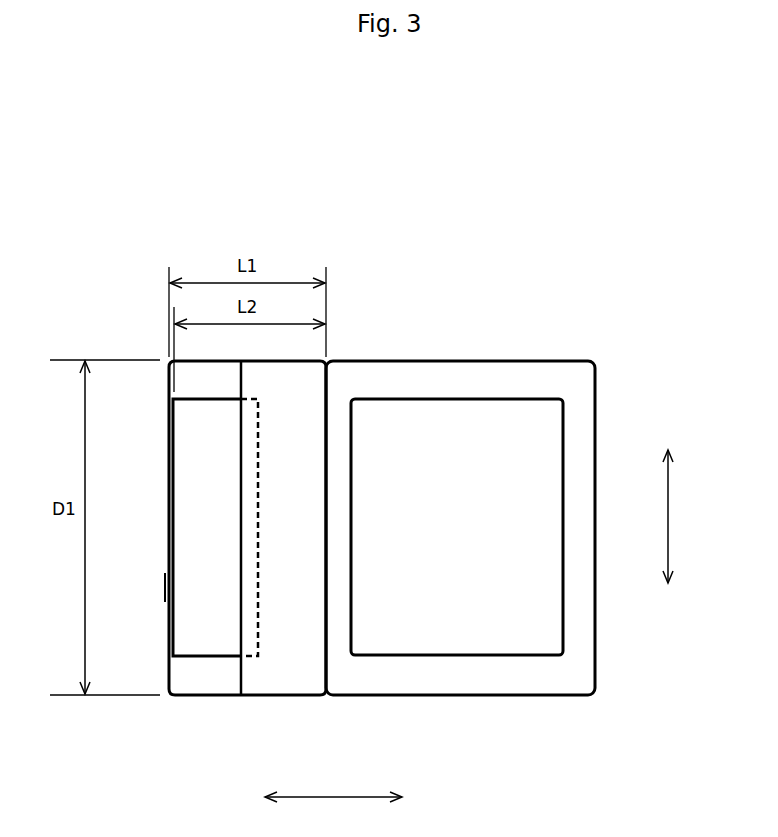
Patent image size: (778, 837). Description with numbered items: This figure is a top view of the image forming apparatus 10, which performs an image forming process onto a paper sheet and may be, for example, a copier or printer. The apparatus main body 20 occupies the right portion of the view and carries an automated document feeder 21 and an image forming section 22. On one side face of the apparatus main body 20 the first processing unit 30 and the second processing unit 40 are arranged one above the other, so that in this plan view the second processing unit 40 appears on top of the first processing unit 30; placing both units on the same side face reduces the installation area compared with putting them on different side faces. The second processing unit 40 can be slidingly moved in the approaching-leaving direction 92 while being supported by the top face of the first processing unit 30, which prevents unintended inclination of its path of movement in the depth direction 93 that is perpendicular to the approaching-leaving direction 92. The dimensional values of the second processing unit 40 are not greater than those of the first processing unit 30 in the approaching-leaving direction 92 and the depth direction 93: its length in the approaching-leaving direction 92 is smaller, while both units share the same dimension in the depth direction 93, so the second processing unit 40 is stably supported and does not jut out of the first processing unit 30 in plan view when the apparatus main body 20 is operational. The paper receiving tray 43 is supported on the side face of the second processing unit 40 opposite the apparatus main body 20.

The image forming apparatus 10 is at (147, 188).
The apparatus main body 20 is at (488, 556).
The automated document feeder 21 is at (555, 440).
The image forming section 22 is at (583, 482).
The first processing unit 30 is at (189, 556).
The second processing unit 40 is at (283, 688).
The paper receiving tray 43 is at (189, 527).
The approaching-leaving direction 92 is at (333, 784).
The depth direction 93 is at (682, 516).